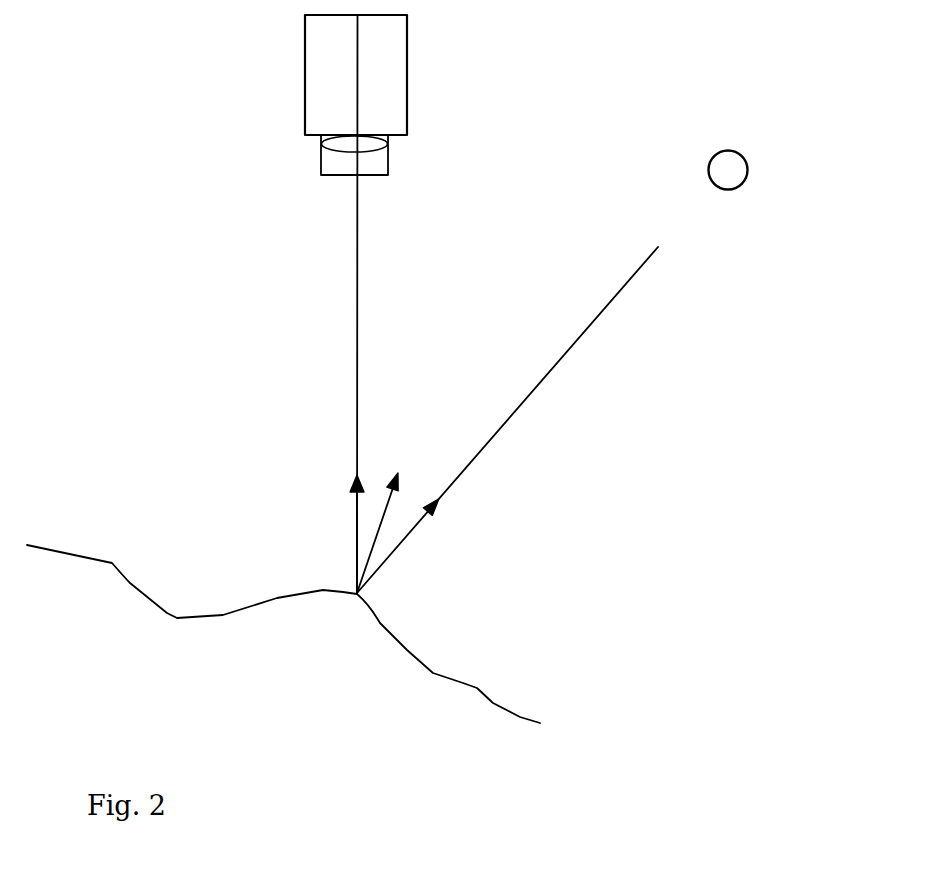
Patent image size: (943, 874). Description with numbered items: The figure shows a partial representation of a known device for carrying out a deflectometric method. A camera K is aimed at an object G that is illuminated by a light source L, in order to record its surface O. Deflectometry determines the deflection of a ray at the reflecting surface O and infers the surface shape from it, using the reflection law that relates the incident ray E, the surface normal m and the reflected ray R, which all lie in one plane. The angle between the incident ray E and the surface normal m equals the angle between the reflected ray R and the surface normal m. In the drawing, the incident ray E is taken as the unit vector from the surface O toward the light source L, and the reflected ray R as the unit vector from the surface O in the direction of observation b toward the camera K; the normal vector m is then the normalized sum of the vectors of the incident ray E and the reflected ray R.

The camera K is at (408, 78).
The light source L is at (748, 168).
The reflected ray R is at (352, 292).
The incident ray E is at (543, 377).
The direction of observation b is at (340, 533).
The surface normal m is at (386, 518).
The surface O is at (520, 670).
The object G is at (75, 552).